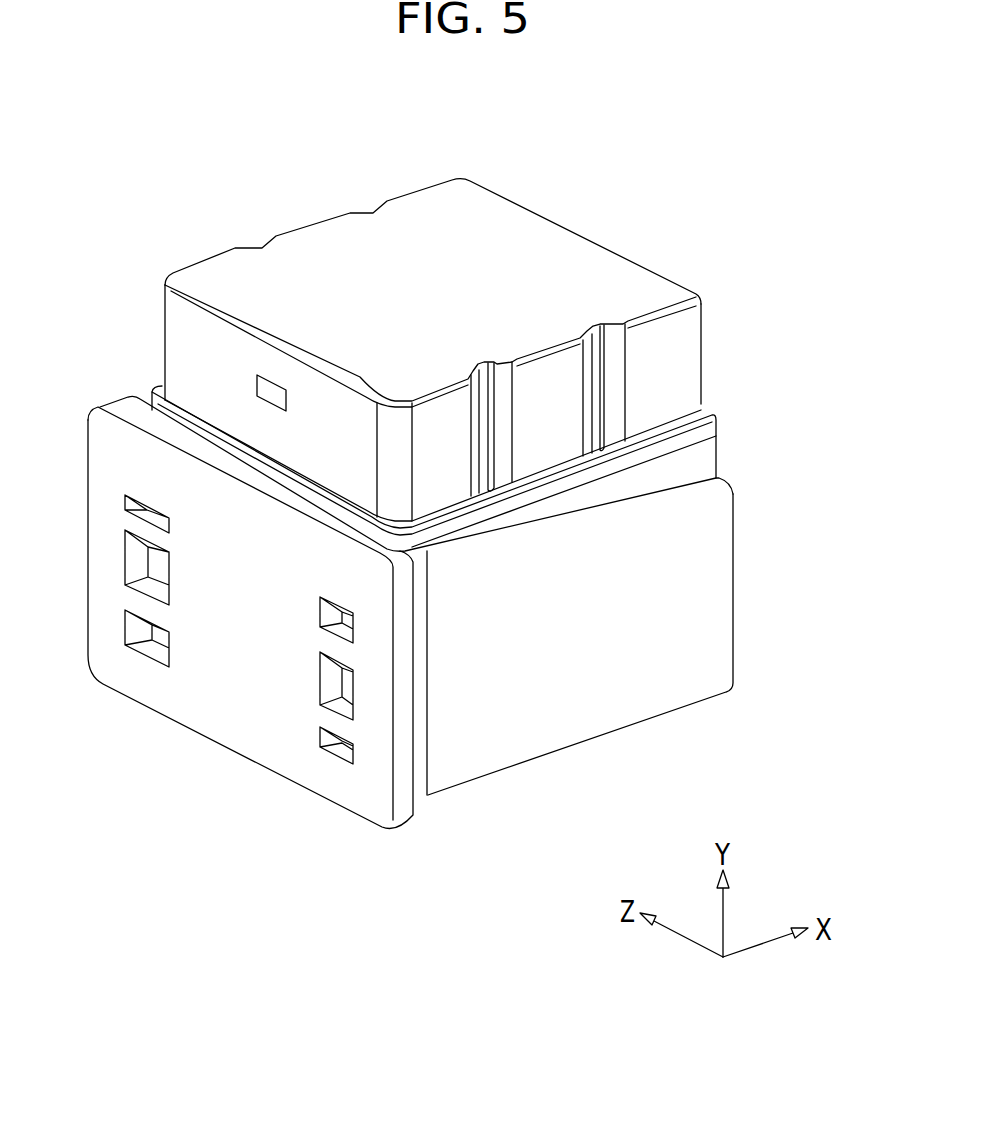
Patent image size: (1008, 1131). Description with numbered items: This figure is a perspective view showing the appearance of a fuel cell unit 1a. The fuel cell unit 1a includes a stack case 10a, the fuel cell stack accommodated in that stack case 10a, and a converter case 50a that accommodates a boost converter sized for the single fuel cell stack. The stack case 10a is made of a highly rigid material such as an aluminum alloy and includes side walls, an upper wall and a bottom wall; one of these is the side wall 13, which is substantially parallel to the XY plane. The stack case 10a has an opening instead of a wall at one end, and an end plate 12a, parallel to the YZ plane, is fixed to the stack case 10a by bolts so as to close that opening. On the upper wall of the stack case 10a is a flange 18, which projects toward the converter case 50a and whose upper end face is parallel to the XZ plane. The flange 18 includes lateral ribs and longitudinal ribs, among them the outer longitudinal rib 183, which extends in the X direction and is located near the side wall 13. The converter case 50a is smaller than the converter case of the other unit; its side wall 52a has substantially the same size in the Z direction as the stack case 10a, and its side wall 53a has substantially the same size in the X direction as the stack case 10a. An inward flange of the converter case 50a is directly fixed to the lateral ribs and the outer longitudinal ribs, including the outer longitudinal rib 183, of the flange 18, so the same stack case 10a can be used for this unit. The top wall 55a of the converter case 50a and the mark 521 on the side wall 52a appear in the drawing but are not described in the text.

The fuel cell unit 1a is at (711, 226).
The converter case 50a is at (670, 274).
The side wall of converter case 52a is at (186, 320).
The mark portion 521 is at (258, 383).
The side wall of converter case 53a is at (668, 353).
The top wall of upper case 55a is at (533, 234).
The stack case 10a is at (747, 654).
The end plate 12a is at (208, 697).
The side wall 13 is at (632, 698).
The flange 18 is at (731, 468).
The outer longitudinal rib 183 is at (682, 460).